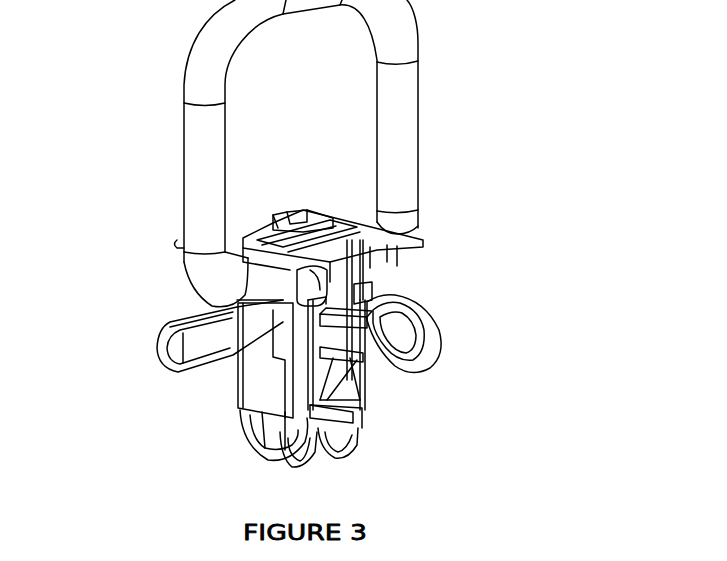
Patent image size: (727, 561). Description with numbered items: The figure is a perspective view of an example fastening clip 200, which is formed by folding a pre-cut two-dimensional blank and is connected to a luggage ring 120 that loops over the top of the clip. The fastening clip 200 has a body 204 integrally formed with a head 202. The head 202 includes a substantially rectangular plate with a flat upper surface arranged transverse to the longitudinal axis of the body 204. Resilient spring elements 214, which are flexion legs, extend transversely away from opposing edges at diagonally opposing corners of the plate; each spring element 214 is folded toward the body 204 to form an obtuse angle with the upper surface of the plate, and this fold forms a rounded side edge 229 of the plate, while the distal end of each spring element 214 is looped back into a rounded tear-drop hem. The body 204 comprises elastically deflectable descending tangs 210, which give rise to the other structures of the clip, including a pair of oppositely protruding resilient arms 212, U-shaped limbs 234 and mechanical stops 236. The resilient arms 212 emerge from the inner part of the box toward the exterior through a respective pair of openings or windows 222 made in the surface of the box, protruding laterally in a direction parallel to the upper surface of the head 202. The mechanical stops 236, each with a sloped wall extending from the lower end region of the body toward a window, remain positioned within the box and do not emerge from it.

The luggage ring 120 is at (217, 61).
The fastening clip 200 is at (475, 344).
The head 202 is at (313, 194).
The body 204 is at (226, 423).
The descending tangs 210 is at (257, 450).
The resilient arms 212 is at (366, 313).
The resilient spring elements 214 is at (164, 322).
The openings or windows 222 is at (356, 295).
The rounded side edge 229 is at (308, 279).
The U-shaped limbs 234 is at (363, 378).
The mechanical stops 236 is at (341, 415).